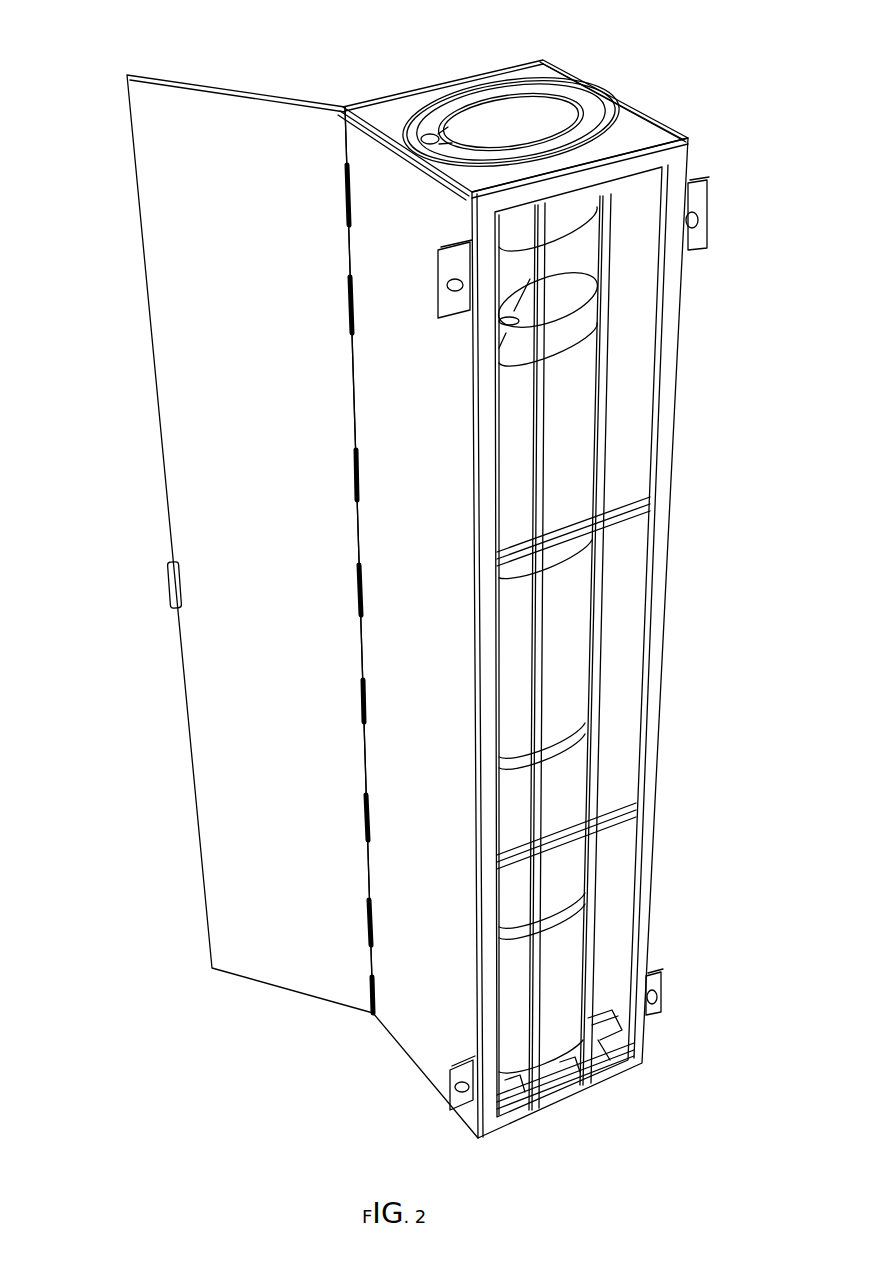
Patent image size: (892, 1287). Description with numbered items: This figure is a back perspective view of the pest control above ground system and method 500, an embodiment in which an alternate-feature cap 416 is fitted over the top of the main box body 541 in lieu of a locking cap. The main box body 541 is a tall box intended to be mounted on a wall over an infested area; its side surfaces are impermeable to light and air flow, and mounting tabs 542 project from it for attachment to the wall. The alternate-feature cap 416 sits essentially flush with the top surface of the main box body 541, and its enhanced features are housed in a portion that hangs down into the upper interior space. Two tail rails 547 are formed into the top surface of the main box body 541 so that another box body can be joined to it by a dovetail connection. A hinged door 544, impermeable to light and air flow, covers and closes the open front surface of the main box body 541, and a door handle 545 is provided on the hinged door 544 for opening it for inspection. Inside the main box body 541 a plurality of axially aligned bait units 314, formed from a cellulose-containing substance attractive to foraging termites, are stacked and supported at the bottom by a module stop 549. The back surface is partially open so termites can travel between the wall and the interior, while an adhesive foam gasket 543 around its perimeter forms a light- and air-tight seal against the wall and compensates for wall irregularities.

The pest control above ground system and method 500 is at (692, 59).
The main box body 541 is at (414, 1043).
The tail rails 547 is at (362, 108).
The alternate-feature cap 416 is at (526, 128).
The hinged door 544 is at (153, 260).
The door handle 545 is at (170, 583).
The mounting tab 542 is at (441, 277).
The adhesive foam gasket 543 is at (664, 527).
The bait units 314 is at (580, 426).
The module stop 549 is at (600, 1046).